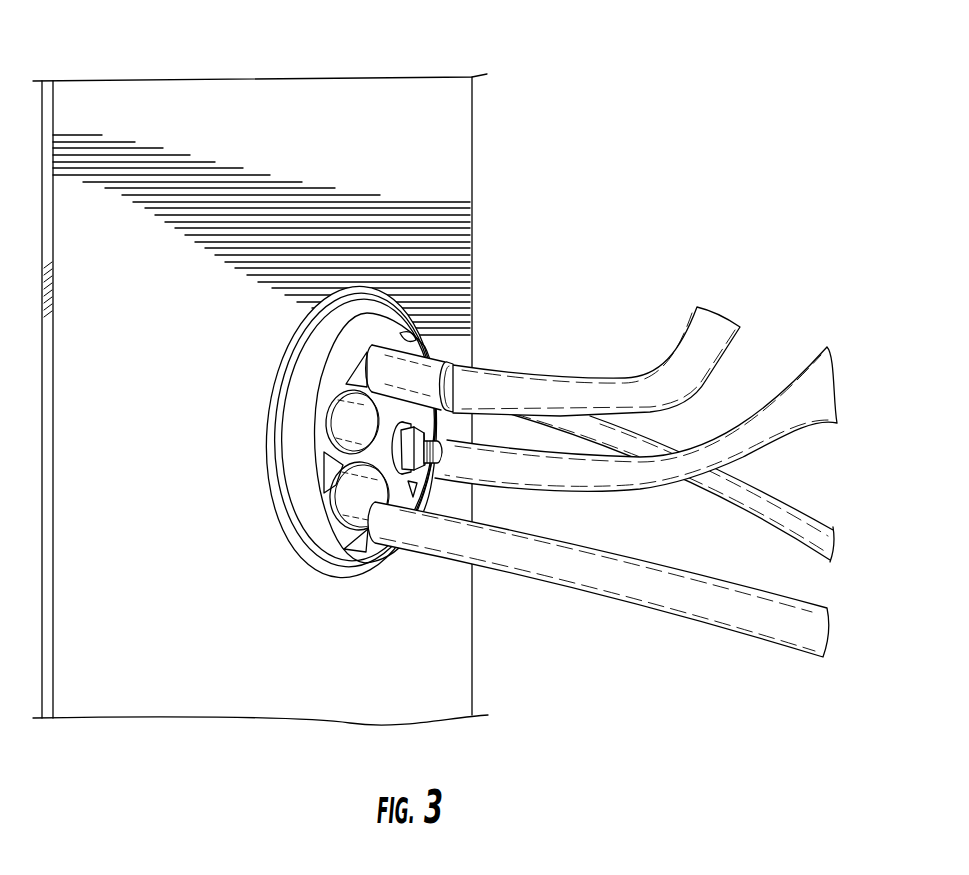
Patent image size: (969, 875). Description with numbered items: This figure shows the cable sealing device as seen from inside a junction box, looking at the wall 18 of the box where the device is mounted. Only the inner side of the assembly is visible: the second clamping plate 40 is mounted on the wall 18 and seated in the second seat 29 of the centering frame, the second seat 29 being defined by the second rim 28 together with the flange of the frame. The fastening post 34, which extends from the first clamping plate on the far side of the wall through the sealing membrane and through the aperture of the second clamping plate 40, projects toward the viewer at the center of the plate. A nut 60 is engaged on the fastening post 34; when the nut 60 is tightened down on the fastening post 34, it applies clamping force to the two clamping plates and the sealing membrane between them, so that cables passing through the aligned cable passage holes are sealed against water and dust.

The wall 18 is at (278, 92).
The second rim 28 is at (366, 507).
The second seat 29 is at (385, 304).
The fastening post 34 is at (442, 452).
The second clamping plate 40 is at (298, 493).
The nut 60 is at (432, 443).